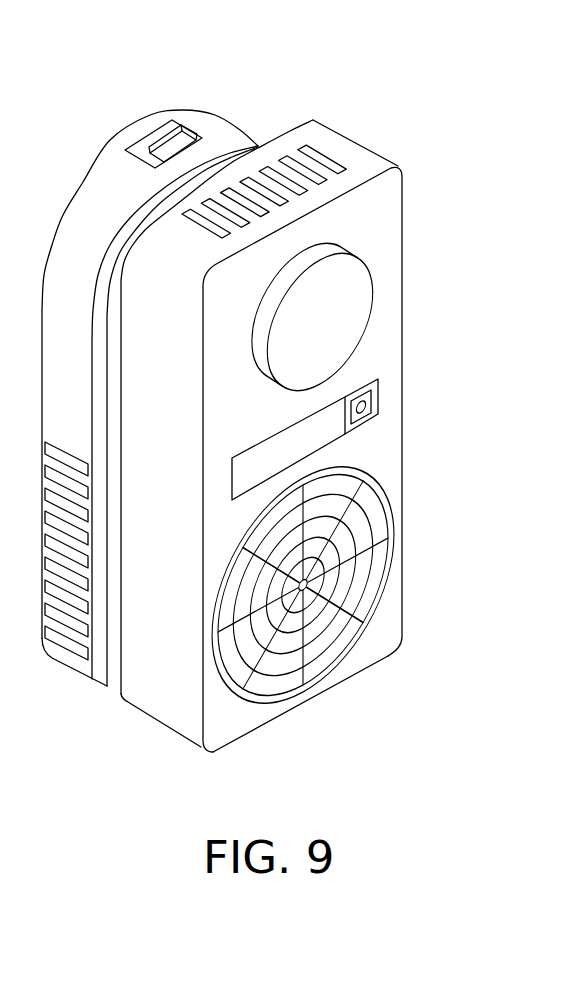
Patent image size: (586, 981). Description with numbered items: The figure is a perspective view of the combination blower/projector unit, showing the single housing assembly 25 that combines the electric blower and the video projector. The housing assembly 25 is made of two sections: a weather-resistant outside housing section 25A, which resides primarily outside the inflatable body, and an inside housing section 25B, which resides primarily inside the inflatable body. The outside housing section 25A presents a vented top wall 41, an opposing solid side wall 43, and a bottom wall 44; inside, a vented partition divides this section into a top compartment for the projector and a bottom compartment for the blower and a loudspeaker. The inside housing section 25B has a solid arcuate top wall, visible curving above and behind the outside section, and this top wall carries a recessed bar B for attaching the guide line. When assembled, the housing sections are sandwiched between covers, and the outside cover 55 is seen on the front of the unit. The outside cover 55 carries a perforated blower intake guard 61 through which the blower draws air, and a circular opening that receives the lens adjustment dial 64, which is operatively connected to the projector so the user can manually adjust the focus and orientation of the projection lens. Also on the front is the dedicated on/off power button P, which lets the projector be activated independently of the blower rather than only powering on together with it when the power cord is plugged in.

The housing assembly 25 is at (200, 82).
The outside housing section 25A is at (387, 227).
The inside housing section 25B is at (84, 230).
The recessed bar B is at (160, 140).
The vented top wall 41 is at (361, 167).
The side wall 43 is at (167, 431).
The bottom wall 44 is at (300, 703).
The outside cover 55 is at (390, 318).
The lens adjustment dial 64 is at (342, 339).
The on/off power button P is at (373, 398).
The perforated blower intake guard 61 is at (385, 506).